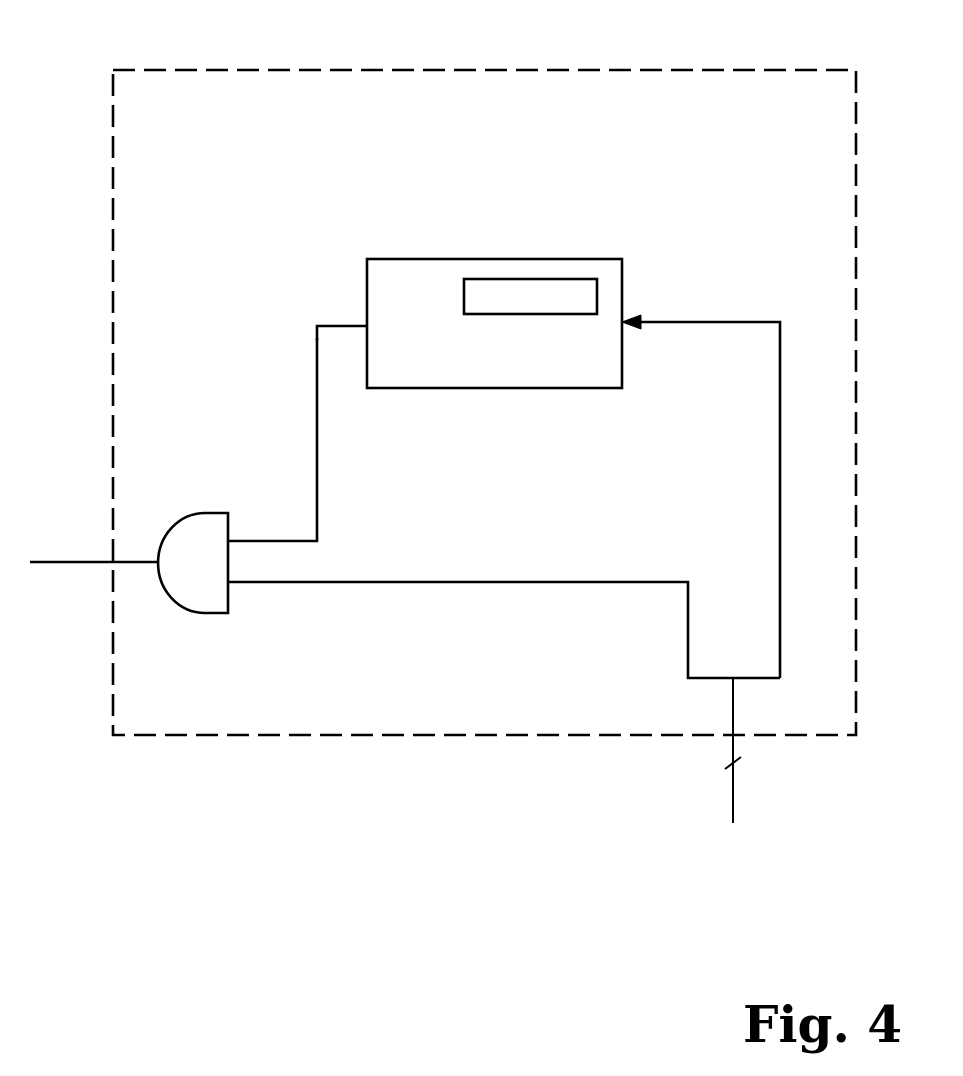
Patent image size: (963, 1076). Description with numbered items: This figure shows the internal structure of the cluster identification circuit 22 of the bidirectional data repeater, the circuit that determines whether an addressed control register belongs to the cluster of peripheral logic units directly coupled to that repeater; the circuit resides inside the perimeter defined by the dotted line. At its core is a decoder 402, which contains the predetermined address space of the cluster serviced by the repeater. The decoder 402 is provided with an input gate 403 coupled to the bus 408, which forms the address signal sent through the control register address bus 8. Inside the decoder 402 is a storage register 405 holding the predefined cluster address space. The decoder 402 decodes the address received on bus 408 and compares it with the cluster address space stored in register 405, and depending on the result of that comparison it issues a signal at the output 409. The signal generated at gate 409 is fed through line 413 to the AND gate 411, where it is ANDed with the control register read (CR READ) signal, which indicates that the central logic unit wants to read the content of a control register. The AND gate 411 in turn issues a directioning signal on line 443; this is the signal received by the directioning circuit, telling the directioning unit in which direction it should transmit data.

The cluster identification circuit 22 is at (243, 72).
The decoder 402 is at (616, 383).
The storage register 405 is at (508, 287).
The bus 408 is at (728, 322).
The input gate 403 is at (625, 327).
The output 409 is at (366, 322).
The line 413 is at (319, 454).
The AND gate 411 is at (202, 595).
The line 443 is at (94, 556).
The control register address bus 8 is at (735, 780).